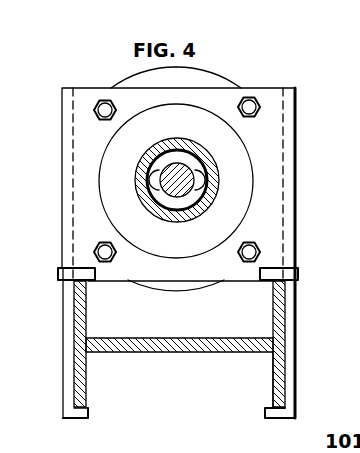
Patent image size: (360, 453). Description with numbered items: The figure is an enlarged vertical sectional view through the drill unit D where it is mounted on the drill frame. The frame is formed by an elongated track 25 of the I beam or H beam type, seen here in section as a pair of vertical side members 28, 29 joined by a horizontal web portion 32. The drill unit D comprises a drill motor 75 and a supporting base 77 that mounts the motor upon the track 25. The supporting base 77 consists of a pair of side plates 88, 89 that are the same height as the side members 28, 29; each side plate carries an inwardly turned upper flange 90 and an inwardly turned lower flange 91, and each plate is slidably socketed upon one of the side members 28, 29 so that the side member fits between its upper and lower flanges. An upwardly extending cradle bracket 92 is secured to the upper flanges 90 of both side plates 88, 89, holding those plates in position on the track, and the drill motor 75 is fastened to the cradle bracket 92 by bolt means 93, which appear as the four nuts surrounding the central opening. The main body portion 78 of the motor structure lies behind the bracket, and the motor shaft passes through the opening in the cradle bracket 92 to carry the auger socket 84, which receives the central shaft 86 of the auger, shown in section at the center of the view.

The drill motor 75 is at (228, 69).
The main body portion 78 is at (130, 86).
The drill unit D is at (300, 137).
The cradle bracket 92 is at (278, 186).
The auger socket 84 is at (177, 152).
The central shaft 86 is at (170, 190).
The bolt means 93 is at (94, 108).
The upper flange 90 is at (78, 276).
The supporting base 77 is at (176, 360).
The side plate 88 is at (68, 362).
The vertical side member 28 is at (86, 392).
The horizontal web portion 32 is at (183, 352).
The track 25 is at (279, 302).
The vertical side member 29 is at (275, 372).
The side plate 89 is at (288, 345).
The lower flange 91 is at (80, 412).